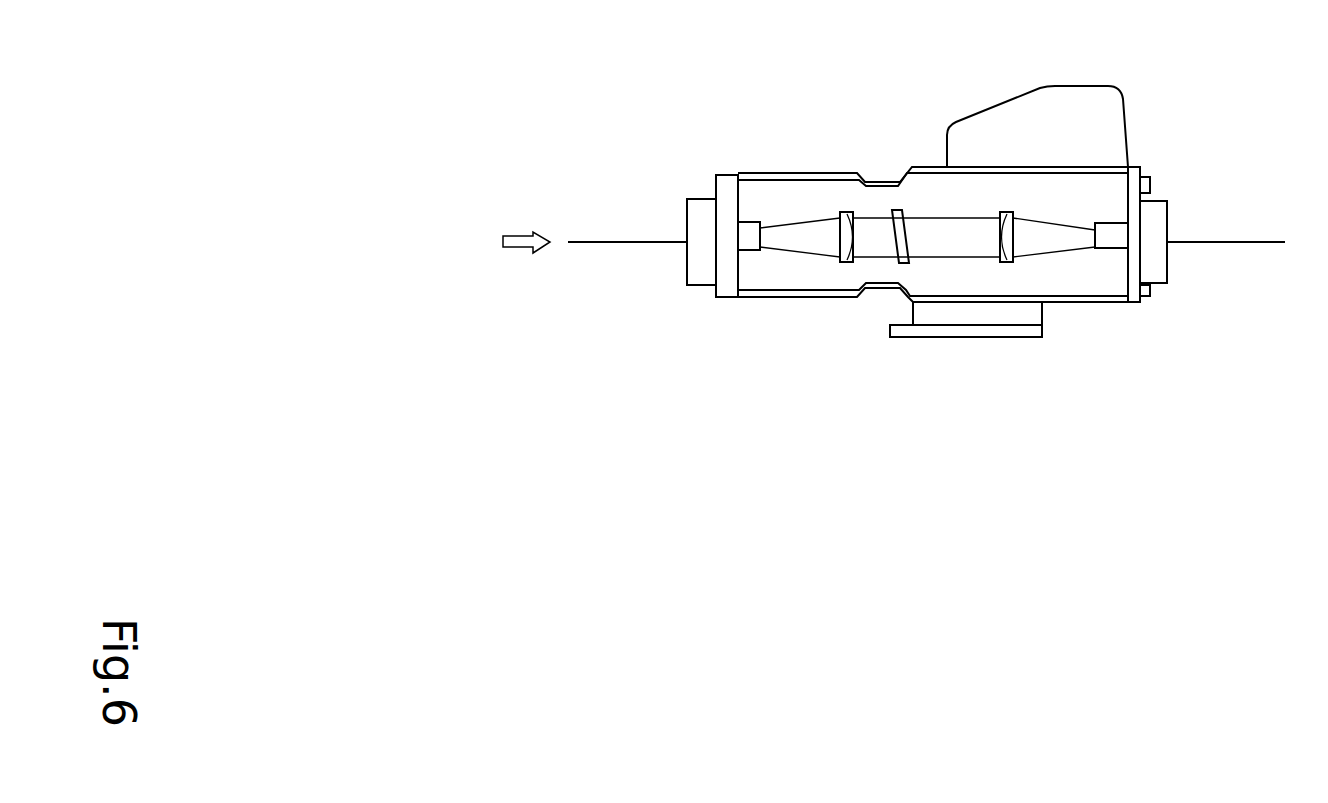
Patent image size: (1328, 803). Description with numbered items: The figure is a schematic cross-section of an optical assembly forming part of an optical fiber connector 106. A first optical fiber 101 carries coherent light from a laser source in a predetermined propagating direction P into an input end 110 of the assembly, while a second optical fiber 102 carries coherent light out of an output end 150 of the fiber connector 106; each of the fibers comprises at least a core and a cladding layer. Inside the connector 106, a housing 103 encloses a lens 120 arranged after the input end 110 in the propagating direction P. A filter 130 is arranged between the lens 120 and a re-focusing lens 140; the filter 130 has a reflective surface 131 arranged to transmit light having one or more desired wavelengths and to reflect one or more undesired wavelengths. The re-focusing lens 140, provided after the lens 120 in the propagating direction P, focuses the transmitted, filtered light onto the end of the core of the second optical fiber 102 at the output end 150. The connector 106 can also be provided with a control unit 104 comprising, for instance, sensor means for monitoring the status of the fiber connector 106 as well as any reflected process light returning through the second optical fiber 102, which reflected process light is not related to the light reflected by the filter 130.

The first optical fiber 101 is at (603, 240).
The second optical fiber 102 is at (1257, 242).
The housing 103 is at (828, 173).
The control unit 104 is at (1080, 118).
The optical fiber connector 106 is at (752, 125).
The input end 110 is at (688, 297).
The lens 120 is at (828, 272).
The filter 130 is at (895, 270).
The reflective surface 131 is at (886, 242).
The re-focusing lens 140 is at (1022, 263).
The output end 150 is at (1160, 298).
The propagating direction P is at (533, 251).